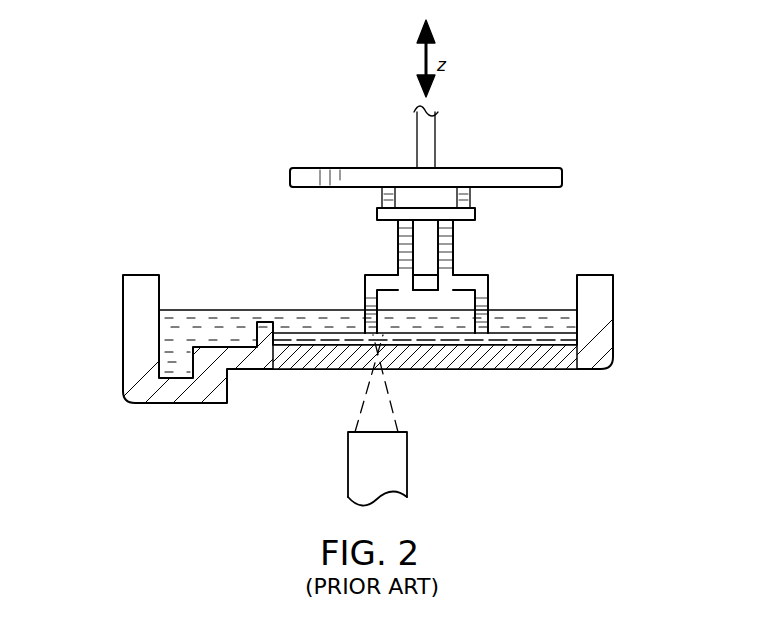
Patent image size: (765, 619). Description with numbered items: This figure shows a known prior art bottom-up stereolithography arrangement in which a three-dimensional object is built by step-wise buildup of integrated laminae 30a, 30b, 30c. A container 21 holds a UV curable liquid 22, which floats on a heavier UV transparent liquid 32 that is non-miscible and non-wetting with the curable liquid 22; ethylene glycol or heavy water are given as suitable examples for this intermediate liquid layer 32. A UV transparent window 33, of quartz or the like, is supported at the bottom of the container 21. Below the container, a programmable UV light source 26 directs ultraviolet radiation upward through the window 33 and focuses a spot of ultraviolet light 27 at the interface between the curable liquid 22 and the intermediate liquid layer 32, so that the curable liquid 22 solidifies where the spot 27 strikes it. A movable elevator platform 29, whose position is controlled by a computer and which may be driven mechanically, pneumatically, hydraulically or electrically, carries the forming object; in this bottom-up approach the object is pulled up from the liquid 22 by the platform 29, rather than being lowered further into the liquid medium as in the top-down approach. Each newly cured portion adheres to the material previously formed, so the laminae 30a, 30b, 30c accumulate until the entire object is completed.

The container 21 is at (132, 360).
The UV curable liquid 22 is at (310, 317).
The UV light source 26 is at (407, 464).
The spot of ultraviolet light 27 is at (393, 347).
The elevator platform 29 is at (497, 176).
The lamina 30a is at (488, 306).
The lamina 30b is at (488, 293).
The lamina 30c is at (467, 282).
The UV transparent liquid 32 is at (535, 342).
The UV transparent window 33 is at (288, 345).